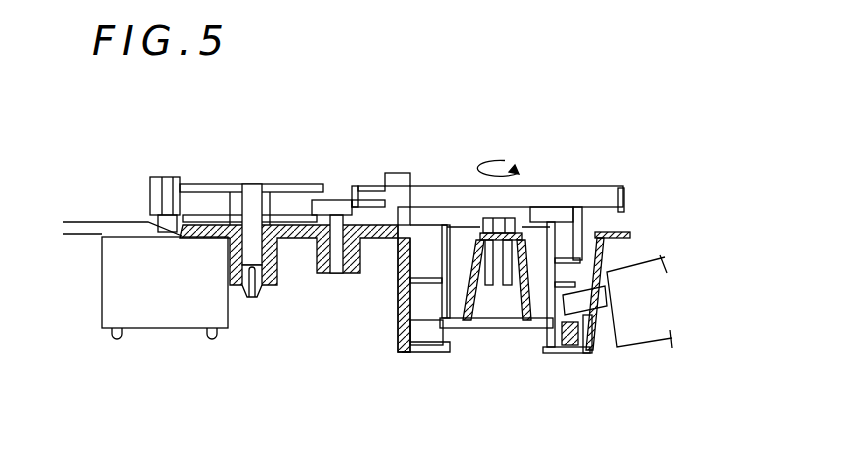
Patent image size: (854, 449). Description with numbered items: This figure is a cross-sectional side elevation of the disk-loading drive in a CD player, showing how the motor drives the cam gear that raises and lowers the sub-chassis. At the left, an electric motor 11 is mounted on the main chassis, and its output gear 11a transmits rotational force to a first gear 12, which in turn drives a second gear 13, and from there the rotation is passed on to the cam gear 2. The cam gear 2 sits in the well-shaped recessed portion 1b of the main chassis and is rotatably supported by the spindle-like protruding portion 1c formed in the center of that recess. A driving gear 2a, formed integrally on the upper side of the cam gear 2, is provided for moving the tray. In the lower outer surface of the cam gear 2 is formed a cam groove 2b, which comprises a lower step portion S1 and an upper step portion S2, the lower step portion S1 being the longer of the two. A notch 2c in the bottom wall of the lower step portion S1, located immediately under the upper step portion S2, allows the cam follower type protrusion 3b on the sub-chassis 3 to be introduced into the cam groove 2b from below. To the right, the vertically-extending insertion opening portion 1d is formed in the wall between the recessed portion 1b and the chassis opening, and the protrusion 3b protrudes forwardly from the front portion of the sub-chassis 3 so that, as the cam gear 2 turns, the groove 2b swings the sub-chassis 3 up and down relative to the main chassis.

The recessed portion 1b is at (398, 315).
The protruding portion 1c is at (470, 263).
The insertion opening portion 1d is at (604, 257).
The cam gear 2 is at (565, 186).
The driving gear 2a is at (627, 196).
The cam groove 2b is at (433, 302).
The notch 2c is at (570, 353).
The sub-chassis 3 is at (637, 316).
The protrusion 3b is at (597, 308).
The electric motor 11 is at (118, 284).
The output gear 11a is at (150, 206).
The first gear 12 is at (241, 184).
The second gear 13 is at (345, 198).
The lower step portion S1 is at (558, 353).
The upper step portion S2 is at (563, 243).